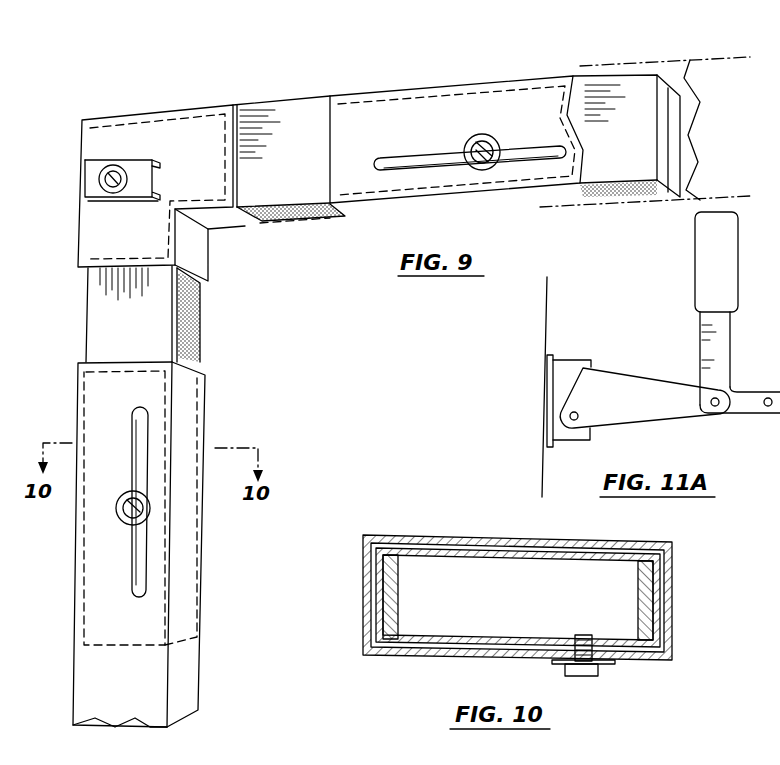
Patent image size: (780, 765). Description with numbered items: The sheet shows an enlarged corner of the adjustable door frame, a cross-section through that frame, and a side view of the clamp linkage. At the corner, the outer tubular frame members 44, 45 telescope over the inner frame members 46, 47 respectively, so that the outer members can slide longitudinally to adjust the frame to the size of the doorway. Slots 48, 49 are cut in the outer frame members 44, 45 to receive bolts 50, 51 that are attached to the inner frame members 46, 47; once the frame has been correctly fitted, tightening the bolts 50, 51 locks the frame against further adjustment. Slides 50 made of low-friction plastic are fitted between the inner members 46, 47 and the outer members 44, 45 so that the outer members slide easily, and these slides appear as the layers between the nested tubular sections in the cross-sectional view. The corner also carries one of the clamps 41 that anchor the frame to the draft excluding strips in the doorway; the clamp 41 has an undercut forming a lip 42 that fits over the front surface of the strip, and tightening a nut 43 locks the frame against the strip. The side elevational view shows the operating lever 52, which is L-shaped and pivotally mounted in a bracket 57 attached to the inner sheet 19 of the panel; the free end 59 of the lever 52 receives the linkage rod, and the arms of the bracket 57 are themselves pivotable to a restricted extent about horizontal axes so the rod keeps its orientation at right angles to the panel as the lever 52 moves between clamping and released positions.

In FIG. 11A, the inner sheet 19 is at (548, 322).
In FIG. 9, the clamp 41 is at (142, 172).
In FIG. 9, the lip 42 is at (98, 180).
In FIG. 9, the nut 43 is at (112, 175).
In FIG. 9, the outer tubular frame member 44 is at (376, 112).
In FIG. 9, the outer tubular frame member 45 is at (96, 400).
In FIG. 10, the outer tubular frame member 45 is at (443, 536).
In FIG. 9, the inner frame member 46 is at (283, 128).
In FIG. 9, the inner frame member 47 is at (95, 311).
In FIG. 10, the inner frame member 47 is at (484, 560).
In FIG. 9, the slot 48 is at (448, 152).
In FIG. 9, the slot 49 is at (143, 448).
In FIG. 9, the bolt / slide 50 is at (487, 150).
In FIG. 10, the bolt / slide 50 is at (380, 590).
In FIG. 9, the bolt 51 is at (125, 516).
In FIG. 10, the bolt 51 is at (585, 670).
In FIG. 11A, the operating lever 52 is at (702, 330).
In FIG. 11A, the bracket 57 is at (686, 406).
In FIG. 11A, the free end of the lever 59 is at (771, 390).